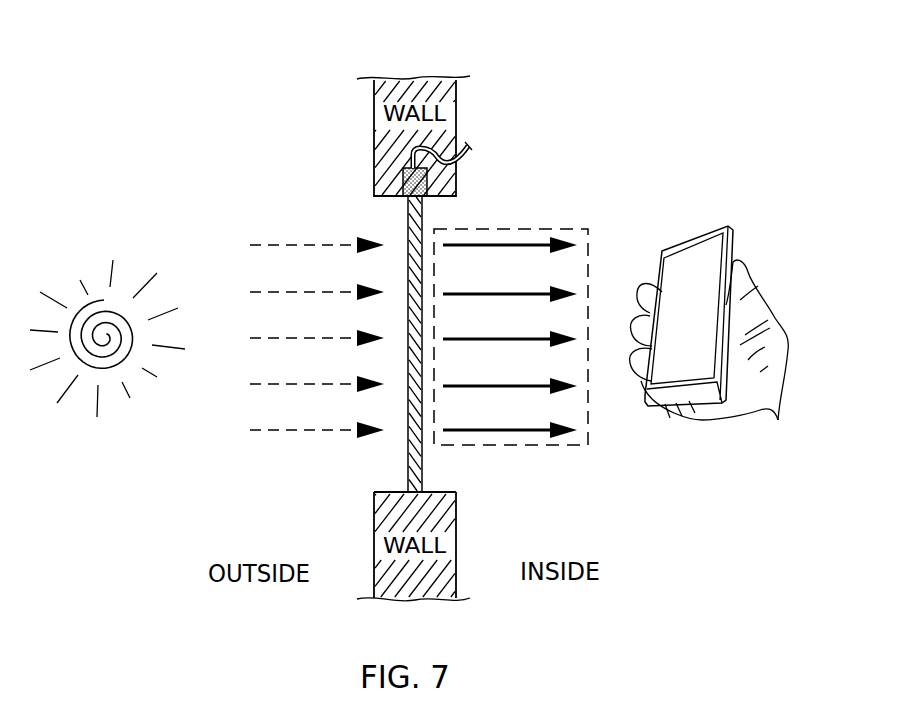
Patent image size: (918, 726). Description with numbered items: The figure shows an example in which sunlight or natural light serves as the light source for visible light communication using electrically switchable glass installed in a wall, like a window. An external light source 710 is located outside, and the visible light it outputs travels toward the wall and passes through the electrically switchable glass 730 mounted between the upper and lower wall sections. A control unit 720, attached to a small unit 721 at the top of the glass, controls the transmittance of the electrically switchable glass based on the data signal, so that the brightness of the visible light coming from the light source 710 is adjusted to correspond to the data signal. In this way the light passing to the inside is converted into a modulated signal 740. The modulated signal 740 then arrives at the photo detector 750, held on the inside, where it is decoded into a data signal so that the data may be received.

The external light source 710 is at (104, 299).
The control unit 720 is at (468, 143).
The light sensor 721 is at (405, 178).
The window glass 730 is at (418, 212).
The modulated signal 740 is at (588, 440).
The photo detector 750 is at (728, 225).